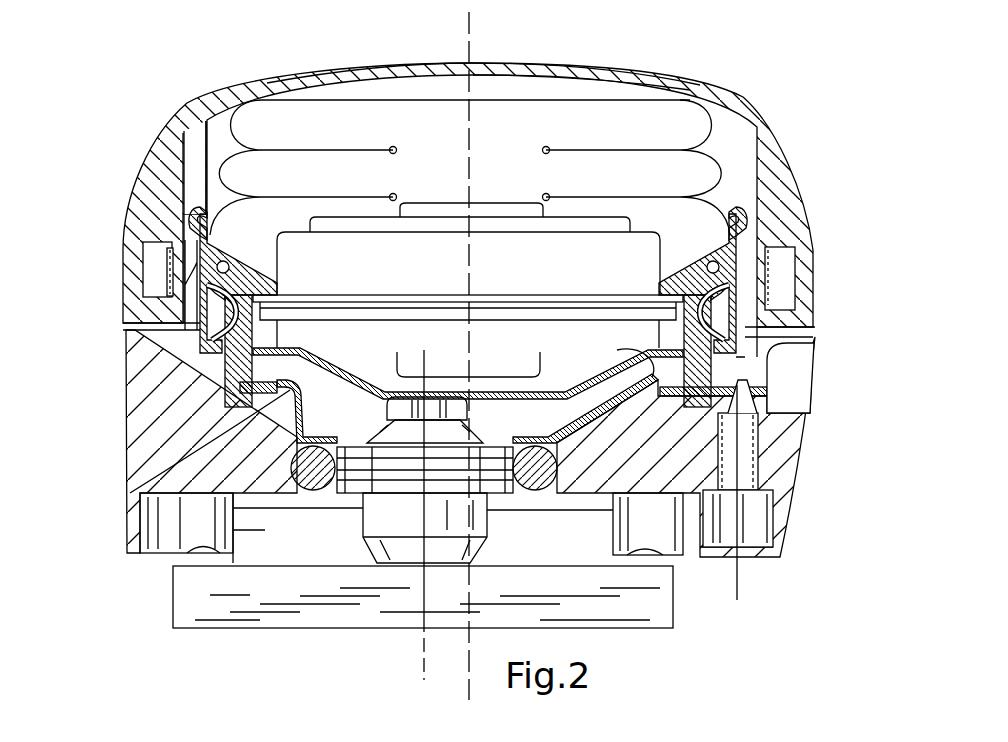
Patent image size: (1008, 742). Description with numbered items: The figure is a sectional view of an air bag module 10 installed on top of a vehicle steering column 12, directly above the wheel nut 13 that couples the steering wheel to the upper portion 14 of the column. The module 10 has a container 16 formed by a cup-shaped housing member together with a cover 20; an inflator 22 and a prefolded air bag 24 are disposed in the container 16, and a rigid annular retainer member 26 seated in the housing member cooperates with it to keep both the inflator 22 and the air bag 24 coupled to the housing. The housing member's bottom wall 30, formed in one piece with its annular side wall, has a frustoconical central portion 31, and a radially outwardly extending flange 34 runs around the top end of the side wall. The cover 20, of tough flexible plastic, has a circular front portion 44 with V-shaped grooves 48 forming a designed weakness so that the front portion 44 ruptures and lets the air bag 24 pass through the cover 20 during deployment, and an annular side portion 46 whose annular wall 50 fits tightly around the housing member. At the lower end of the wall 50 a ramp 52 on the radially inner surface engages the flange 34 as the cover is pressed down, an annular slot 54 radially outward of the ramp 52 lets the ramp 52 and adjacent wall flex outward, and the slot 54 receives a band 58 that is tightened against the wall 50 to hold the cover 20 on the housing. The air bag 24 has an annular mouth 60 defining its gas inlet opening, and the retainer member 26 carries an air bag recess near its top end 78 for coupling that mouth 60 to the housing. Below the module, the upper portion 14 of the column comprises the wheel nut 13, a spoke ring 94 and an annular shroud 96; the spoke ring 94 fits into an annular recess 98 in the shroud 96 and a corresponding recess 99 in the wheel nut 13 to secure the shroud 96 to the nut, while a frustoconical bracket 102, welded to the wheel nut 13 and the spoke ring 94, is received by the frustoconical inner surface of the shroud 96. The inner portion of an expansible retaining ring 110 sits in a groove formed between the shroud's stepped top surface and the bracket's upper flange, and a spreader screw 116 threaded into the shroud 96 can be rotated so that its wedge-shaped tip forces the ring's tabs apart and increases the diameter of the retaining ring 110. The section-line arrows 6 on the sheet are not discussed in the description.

The section line 6- 6 is at (125, 367).
The air bag module 10 is at (118, 226).
The vehicle steering column 12 is at (208, 597).
The wheel nut 13 is at (390, 406).
The upper portion of the steering column 14 is at (812, 478).
The container 16 is at (185, 100).
The cover 20 is at (416, 60).
The inflator 22 is at (468, 290).
The air bag 24 is at (636, 120).
The retainer member 26 is at (727, 362).
The bottom wall 30 is at (607, 368).
The frustoconical central portion 31 is at (540, 397).
The flange 34 is at (204, 112).
The front portion 44 is at (560, 72).
The side portion 46 is at (160, 170).
The V-shaped grooves 48 is at (471, 62).
The annular wall 50 is at (183, 290).
The ramp 52 is at (161, 340).
The annular slot 54 is at (150, 262).
The band 58 is at (166, 272).
The mouth 60 is at (262, 256).
The top end of the retainer member 78 is at (199, 232).
The spoke ring 94 is at (543, 467).
The shroud 96 is at (787, 483).
The annular recess 98 is at (263, 480).
The recess 99 is at (393, 472).
The bracket 102 is at (132, 492).
The retaining ring 110 is at (792, 352).
The spreader screw 116 is at (753, 520).